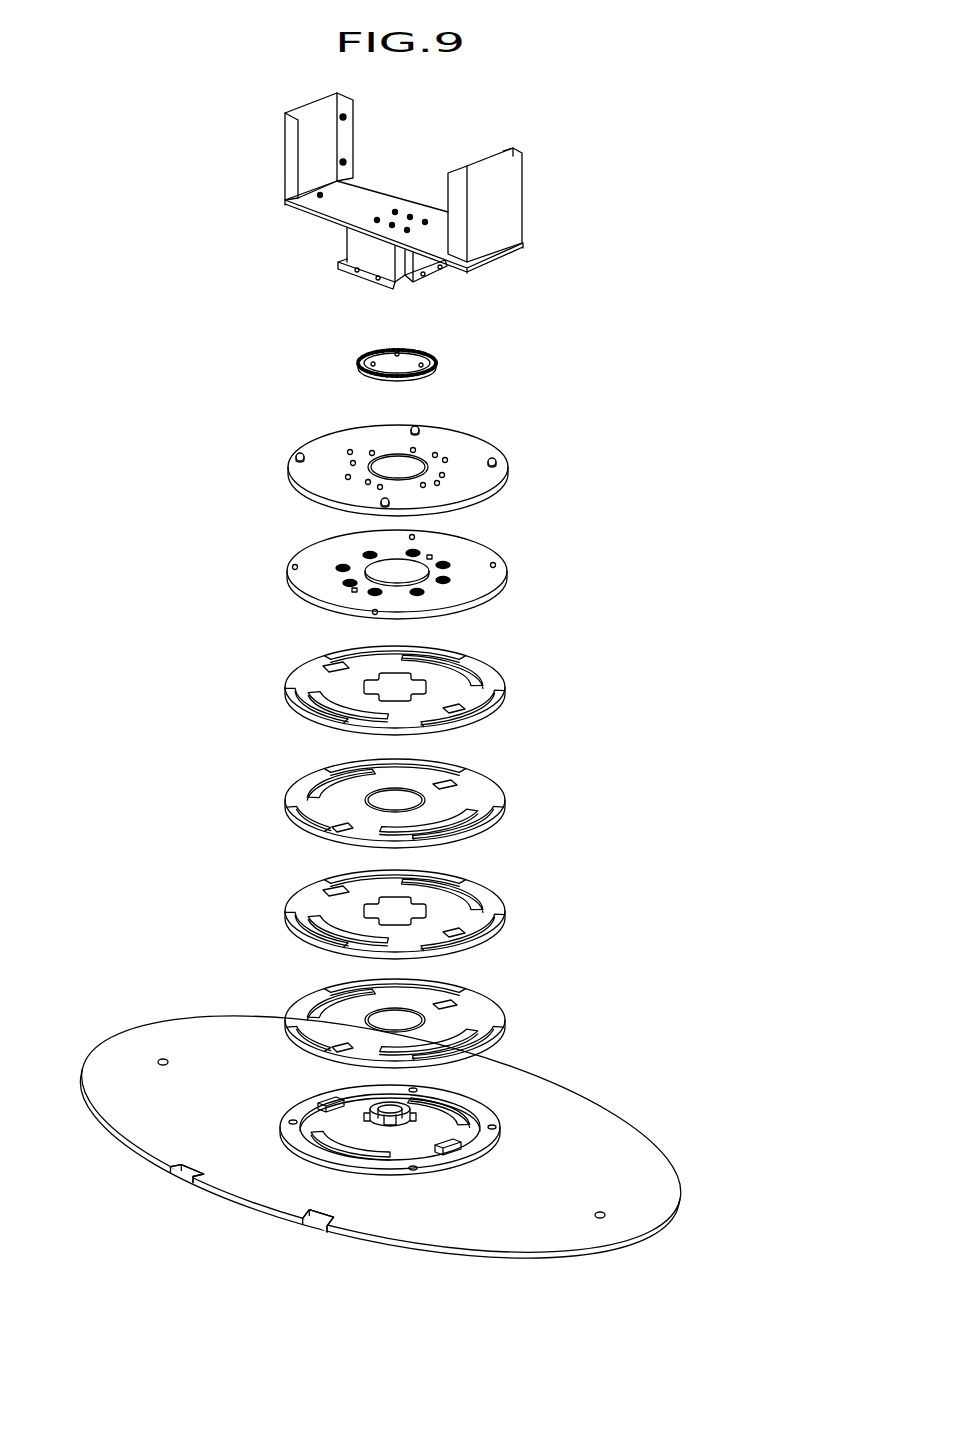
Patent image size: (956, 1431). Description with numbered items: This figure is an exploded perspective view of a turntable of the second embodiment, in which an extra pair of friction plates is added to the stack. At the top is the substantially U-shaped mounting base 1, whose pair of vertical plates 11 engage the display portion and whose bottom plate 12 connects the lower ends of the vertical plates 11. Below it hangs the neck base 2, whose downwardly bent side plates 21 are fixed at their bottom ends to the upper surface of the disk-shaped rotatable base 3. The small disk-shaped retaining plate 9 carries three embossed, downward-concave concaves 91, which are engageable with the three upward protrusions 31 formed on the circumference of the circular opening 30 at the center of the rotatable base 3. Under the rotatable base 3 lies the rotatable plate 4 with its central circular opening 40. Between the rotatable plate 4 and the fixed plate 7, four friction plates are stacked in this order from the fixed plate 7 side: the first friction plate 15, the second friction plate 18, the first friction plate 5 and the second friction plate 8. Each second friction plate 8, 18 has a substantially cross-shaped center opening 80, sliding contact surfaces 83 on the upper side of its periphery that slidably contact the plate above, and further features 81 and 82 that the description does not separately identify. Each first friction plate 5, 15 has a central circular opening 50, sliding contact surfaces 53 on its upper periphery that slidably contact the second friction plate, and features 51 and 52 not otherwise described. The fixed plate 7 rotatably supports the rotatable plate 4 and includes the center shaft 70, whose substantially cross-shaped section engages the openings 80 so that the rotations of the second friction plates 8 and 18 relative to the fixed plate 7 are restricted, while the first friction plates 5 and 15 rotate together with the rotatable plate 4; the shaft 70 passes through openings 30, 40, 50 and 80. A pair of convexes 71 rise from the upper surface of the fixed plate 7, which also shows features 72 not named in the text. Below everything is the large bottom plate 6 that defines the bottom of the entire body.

The mounting base 1 is at (390, 183).
The vertical plates 11 is at (328, 143).
The bottom plate 12 is at (373, 197).
The neck base 2 is at (341, 278).
The side plates 21 is at (400, 277).
The retaining plate 9 is at (375, 355).
The concaves 91 is at (413, 352).
The rotatable base 3 is at (370, 454).
The circular opening 30 is at (367, 460).
The protrusions 31 is at (385, 457).
The rotatable plate 4 is at (353, 562).
The circular opening 40 is at (390, 563).
The second friction plate 8 is at (290, 663).
The opening 80 is at (417, 682).
The rectangular hole 81 is at (332, 660).
The arc slot 82 is at (480, 670).
The sliding contact surfaces 83 is at (447, 647).
The first friction plate 5 is at (280, 790).
The circular opening 50 is at (377, 800).
The rectangular hole 51 is at (470, 785).
The arc slot 52 is at (320, 787).
The sliding contact surfaces 53 is at (443, 763).
The second friction plate 18 is at (290, 889).
The first friction plate 15 is at (282, 1006).
The fixed plate 7 is at (364, 1149).
The center shaft 70 is at (390, 1135).
The convexes 71 is at (323, 1098).
The arc groove 72 is at (453, 1117).
The base plate 6 is at (350, 1247).